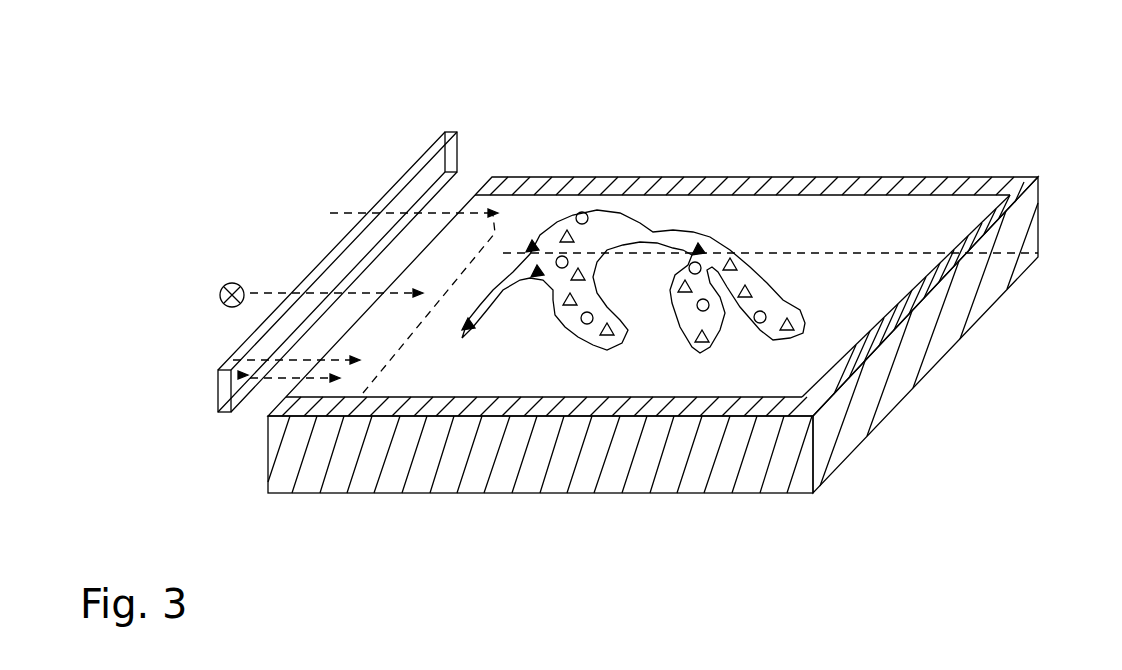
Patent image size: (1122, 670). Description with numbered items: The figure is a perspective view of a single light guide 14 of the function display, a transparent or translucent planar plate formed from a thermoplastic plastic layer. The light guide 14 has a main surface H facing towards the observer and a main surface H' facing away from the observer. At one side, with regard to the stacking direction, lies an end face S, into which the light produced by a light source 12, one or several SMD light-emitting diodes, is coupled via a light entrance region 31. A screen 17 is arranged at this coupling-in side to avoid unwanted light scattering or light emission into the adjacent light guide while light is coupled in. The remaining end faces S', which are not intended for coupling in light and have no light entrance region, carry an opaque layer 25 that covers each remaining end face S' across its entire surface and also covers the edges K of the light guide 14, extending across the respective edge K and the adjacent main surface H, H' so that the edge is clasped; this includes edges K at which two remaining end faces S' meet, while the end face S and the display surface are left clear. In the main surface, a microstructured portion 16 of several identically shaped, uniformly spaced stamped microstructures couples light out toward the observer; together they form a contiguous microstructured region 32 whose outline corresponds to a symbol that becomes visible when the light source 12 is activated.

The light source 12 is at (232, 283).
The light guide 14 is at (675, 456).
The microstructured portion 16 is at (603, 232).
The screen 17 is at (447, 112).
The opaque layer 25 is at (1013, 178).
The light entrance region 31 is at (230, 369).
The microstructured region 32 is at (711, 233).
The main surface H is at (686, 162).
The main surface H' is at (569, 537).
The edge K is at (829, 176).
The end face S is at (388, 331).
The remaining end face S' is at (720, 341).